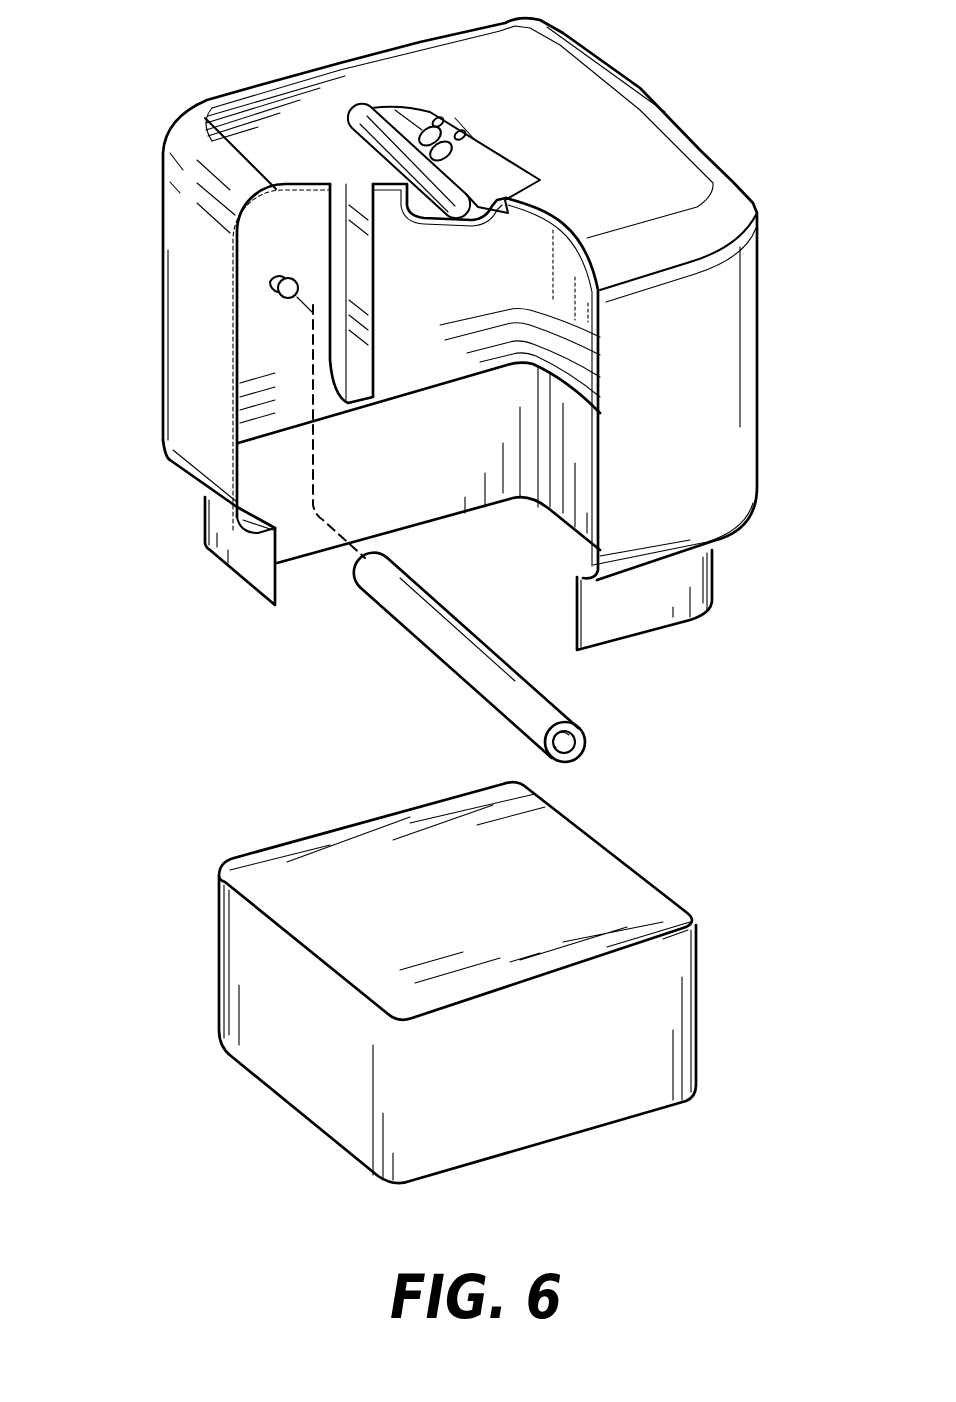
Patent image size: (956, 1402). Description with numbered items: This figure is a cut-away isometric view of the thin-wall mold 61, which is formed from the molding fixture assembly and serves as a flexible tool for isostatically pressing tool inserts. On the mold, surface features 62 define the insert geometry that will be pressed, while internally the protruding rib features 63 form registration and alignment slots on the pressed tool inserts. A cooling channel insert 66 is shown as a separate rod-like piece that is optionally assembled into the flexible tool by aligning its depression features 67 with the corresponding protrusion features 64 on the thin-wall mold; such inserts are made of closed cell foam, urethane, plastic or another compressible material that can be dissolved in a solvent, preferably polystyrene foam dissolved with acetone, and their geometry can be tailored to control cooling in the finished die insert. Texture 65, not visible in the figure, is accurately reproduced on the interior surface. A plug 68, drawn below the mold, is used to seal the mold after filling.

The thin-wall mold 61 is at (391, 329).
The surface features 62 is at (477, 165).
The protruding rib features 63 is at (363, 377).
The protrusion features 64 is at (282, 298).
The texture 65 is at (503, 217).
The cooling channel inserts 66 is at (488, 657).
The depression features 67 is at (576, 751).
The plug 68 is at (217, 927).